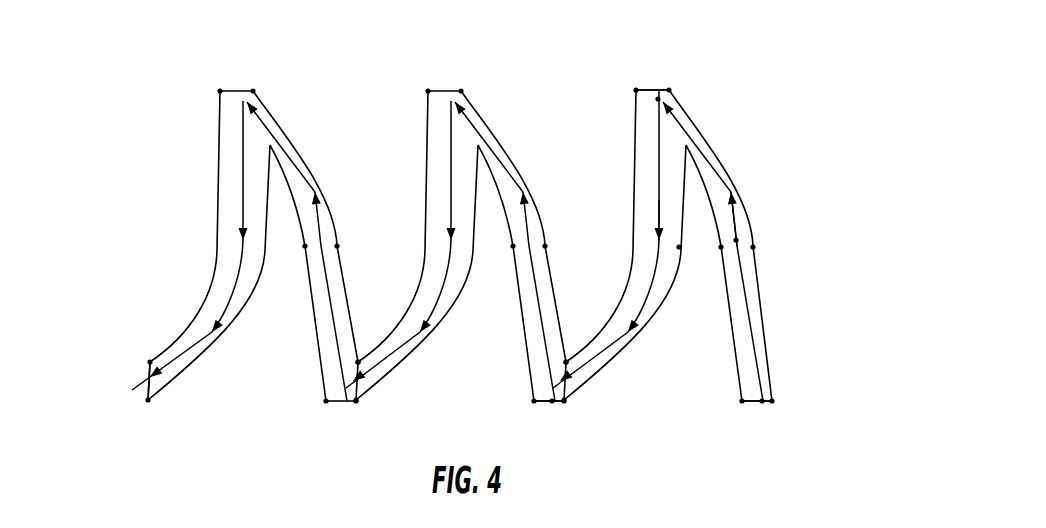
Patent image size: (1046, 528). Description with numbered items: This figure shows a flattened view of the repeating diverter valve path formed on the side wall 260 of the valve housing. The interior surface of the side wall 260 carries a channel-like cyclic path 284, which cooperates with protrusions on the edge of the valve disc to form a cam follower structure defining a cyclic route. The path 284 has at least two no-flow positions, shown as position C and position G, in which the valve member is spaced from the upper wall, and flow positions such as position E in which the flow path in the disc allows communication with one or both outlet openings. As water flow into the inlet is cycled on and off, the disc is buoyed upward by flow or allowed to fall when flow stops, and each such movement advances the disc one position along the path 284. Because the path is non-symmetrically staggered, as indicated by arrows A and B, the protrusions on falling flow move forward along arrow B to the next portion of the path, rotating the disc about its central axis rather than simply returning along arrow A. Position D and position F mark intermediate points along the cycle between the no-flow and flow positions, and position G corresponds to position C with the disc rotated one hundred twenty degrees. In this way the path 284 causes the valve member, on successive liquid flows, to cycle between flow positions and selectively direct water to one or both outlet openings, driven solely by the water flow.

The side wall 260 is at (575, 97).
The cyclic path 284 is at (470, 97).
The arrow A is at (264, 122).
The arrow B is at (243, 120).
The position C is at (132, 390).
The position D is at (737, 240).
The position E is at (658, 90).
The position F is at (655, 246).
The position G is at (552, 401).